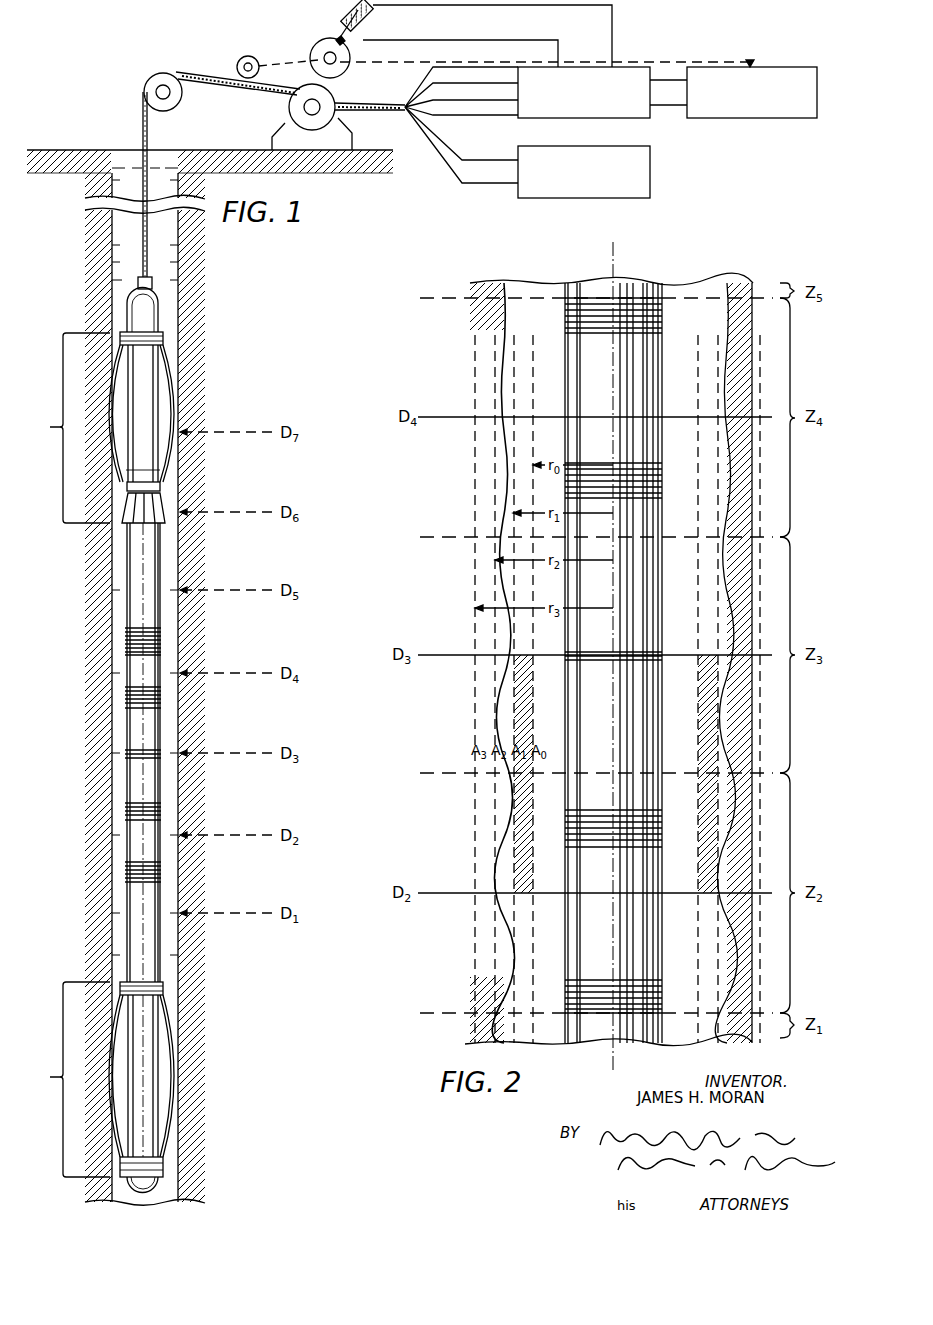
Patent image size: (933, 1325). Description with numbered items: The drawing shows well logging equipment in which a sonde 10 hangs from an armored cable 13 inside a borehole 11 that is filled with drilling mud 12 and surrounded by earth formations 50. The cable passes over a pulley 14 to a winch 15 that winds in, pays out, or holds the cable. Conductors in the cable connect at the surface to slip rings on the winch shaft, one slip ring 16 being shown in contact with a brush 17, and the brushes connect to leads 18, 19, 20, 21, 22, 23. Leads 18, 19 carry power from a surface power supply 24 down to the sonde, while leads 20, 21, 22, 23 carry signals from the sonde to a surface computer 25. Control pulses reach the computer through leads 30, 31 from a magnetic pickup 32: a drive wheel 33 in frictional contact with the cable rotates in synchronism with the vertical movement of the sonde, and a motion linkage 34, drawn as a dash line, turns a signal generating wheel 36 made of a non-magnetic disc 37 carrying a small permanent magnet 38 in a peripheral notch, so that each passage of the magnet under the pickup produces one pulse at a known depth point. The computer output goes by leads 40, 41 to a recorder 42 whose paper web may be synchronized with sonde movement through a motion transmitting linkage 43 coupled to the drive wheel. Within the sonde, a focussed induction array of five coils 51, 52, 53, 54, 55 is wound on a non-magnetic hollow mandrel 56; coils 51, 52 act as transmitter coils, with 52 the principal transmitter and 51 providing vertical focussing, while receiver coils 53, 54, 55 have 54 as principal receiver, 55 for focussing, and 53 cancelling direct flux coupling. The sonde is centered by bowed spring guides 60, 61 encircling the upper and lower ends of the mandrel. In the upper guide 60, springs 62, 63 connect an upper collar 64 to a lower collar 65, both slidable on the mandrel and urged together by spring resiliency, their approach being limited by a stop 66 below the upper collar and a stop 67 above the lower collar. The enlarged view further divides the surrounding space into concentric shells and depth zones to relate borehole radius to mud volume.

In FIG. 1, the sonde 10 is at (154, 752).
In FIG. 1, the borehole 11 is at (188, 272).
In FIG. 2, the borehole 11 is at (726, 283).
In FIG. 1, the drilling mud 12 is at (168, 304).
In FIG. 1, the armored cable 13 is at (143, 126).
In FIG. 1, the pulley 14 is at (177, 106).
In FIG. 1, the winch 15 is at (292, 97).
In FIG. 1, the slip ring 16 is at (290, 120).
In FIG. 1, the brush 17 is at (320, 100).
In FIG. 1, the lead 18 is at (484, 185).
In FIG. 1, the lead 19 is at (484, 160).
In FIG. 1, the lead 20 is at (460, 116).
In FIG. 1, the lead 21 is at (404, 105).
In FIG. 1, the lead 22 is at (428, 74).
In FIG. 1, the lead 23 is at (476, 62).
In FIG. 1, the power supply 24 is at (650, 183).
In FIG. 1, the computer 25 is at (604, 118).
In FIG. 1, the lead 30 is at (558, 42).
In FIG. 1, the lead 31 is at (530, 5).
In FIG. 1, the magnetic pickup 32 is at (382, 19).
In FIG. 1, the drive wheel 33 is at (248, 56).
In FIG. 1, the motion linkage 34 is at (286, 64).
In FIG. 1, the signal generating wheel 36 is at (324, 42).
In FIG. 1, the disc 37 is at (351, 57).
In FIG. 1, the permanent magnet 38 is at (348, 12).
In FIG. 1, the lead 40 is at (673, 106).
In FIG. 1, the lead 41 is at (678, 72).
In FIG. 1, the recorder 42 is at (792, 67).
In FIG. 1, the motion transmitting linkage 43 is at (723, 60).
In FIG. 1, the earth formations 50 is at (187, 405).
In FIG. 1, the induction coil 51 is at (162, 645).
In FIG. 2, the induction coil 51 is at (663, 322).
In FIG. 1, the induction coil 52 is at (162, 702).
In FIG. 2, the induction coil 52 is at (663, 469).
In FIG. 1, the induction coil 53 is at (162, 753).
In FIG. 2, the induction coil 53 is at (660, 655).
In FIG. 1, the induction coil 54 is at (162, 815).
In FIG. 2, the induction coil 54 is at (662, 840).
In FIG. 1, the induction coil 55 is at (162, 874).
In FIG. 2, the induction coil 55 is at (662, 993).
In FIG. 1, the mandrel 56 is at (140, 675).
In FIG. 2, the mandrel 56 is at (586, 375).
In FIG. 1, the upper guide 60 is at (134, 442).
In FIG. 1, the lower guide 61 is at (95, 1087).
In FIG. 1, the bowed spring 62 is at (110, 420).
In FIG. 1, the bowed spring 63 is at (166, 471).
In FIG. 1, the upper collar 64 is at (163, 338).
In FIG. 1, the lower collar 65 is at (140, 514).
In FIG. 1, the stop 66 is at (160, 349).
In FIG. 1, the stop 67 is at (160, 487).